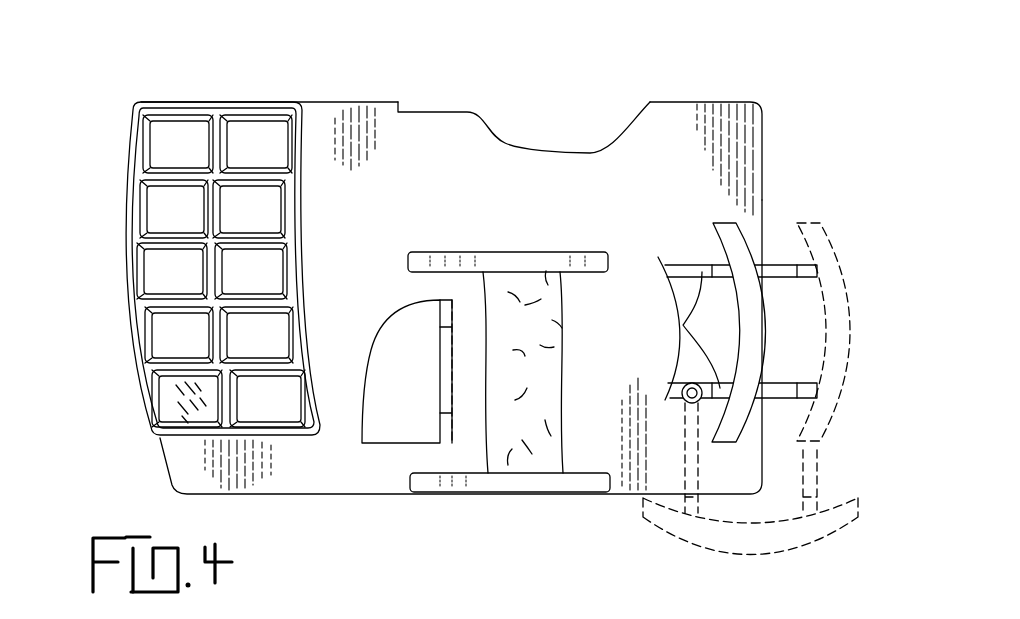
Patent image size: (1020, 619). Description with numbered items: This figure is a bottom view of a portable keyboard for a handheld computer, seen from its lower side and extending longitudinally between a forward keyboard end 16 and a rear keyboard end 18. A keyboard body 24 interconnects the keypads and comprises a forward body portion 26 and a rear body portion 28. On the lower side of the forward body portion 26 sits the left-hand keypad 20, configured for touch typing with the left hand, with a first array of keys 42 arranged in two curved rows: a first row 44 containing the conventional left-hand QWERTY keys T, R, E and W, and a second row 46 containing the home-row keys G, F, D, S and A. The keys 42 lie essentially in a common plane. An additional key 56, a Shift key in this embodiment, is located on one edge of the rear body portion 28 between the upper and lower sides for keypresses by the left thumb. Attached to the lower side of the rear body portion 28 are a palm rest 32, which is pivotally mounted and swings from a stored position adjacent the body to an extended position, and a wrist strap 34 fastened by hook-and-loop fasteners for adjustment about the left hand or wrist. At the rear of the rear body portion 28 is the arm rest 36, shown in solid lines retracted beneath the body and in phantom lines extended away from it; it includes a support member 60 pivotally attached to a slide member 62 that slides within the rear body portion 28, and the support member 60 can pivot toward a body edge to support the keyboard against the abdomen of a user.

The forward keyboard end 16 is at (182, 297).
The rear keyboard end 18 is at (764, 143).
The left-hand keypad 20 is at (193, 438).
The keyboard body 24 is at (335, 101).
The forward body portion 26 is at (122, 212).
The rear body portion 28 is at (680, 100).
The palm rest 32 is at (402, 315).
The wrist strap 34 is at (530, 270).
The arm rest 36 is at (740, 229).
The keys 42 is at (182, 117).
The first row 44 is at (203, 115).
The second row 46 is at (277, 432).
The additional key 56 is at (563, 98).
The support member 60 is at (688, 533).
The slide member 62 is at (683, 325).